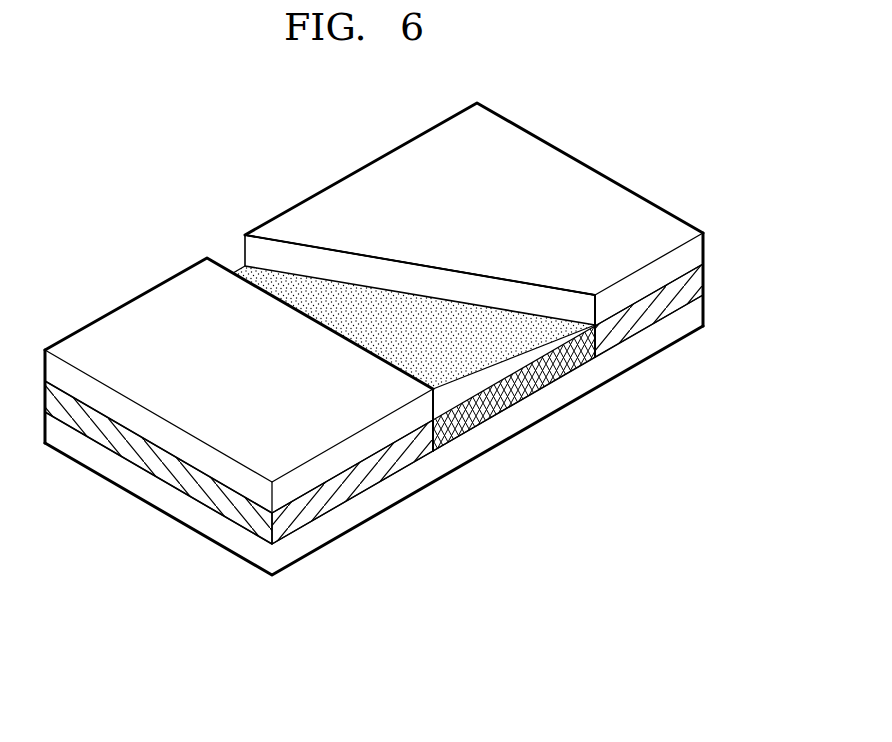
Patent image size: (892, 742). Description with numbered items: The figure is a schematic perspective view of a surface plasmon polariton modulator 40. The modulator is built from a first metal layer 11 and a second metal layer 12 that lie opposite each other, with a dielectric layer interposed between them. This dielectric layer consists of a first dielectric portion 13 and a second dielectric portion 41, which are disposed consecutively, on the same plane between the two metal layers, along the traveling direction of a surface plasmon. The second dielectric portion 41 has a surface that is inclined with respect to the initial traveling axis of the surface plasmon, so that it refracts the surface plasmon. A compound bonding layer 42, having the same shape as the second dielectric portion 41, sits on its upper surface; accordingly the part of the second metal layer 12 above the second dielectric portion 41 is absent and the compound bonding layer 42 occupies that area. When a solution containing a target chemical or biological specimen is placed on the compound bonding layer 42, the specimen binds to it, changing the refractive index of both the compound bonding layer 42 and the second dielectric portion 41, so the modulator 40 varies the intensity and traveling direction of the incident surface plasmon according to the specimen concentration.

The first metal layer 11 is at (704, 316).
The second metal layer 12 is at (137, 312).
The first dielectric portion 13 is at (704, 284).
The surface plasmon polariton modulator 40 is at (444, 599).
The second dielectric portion 41 is at (538, 387).
The compound bonding layer 42 is at (483, 420).